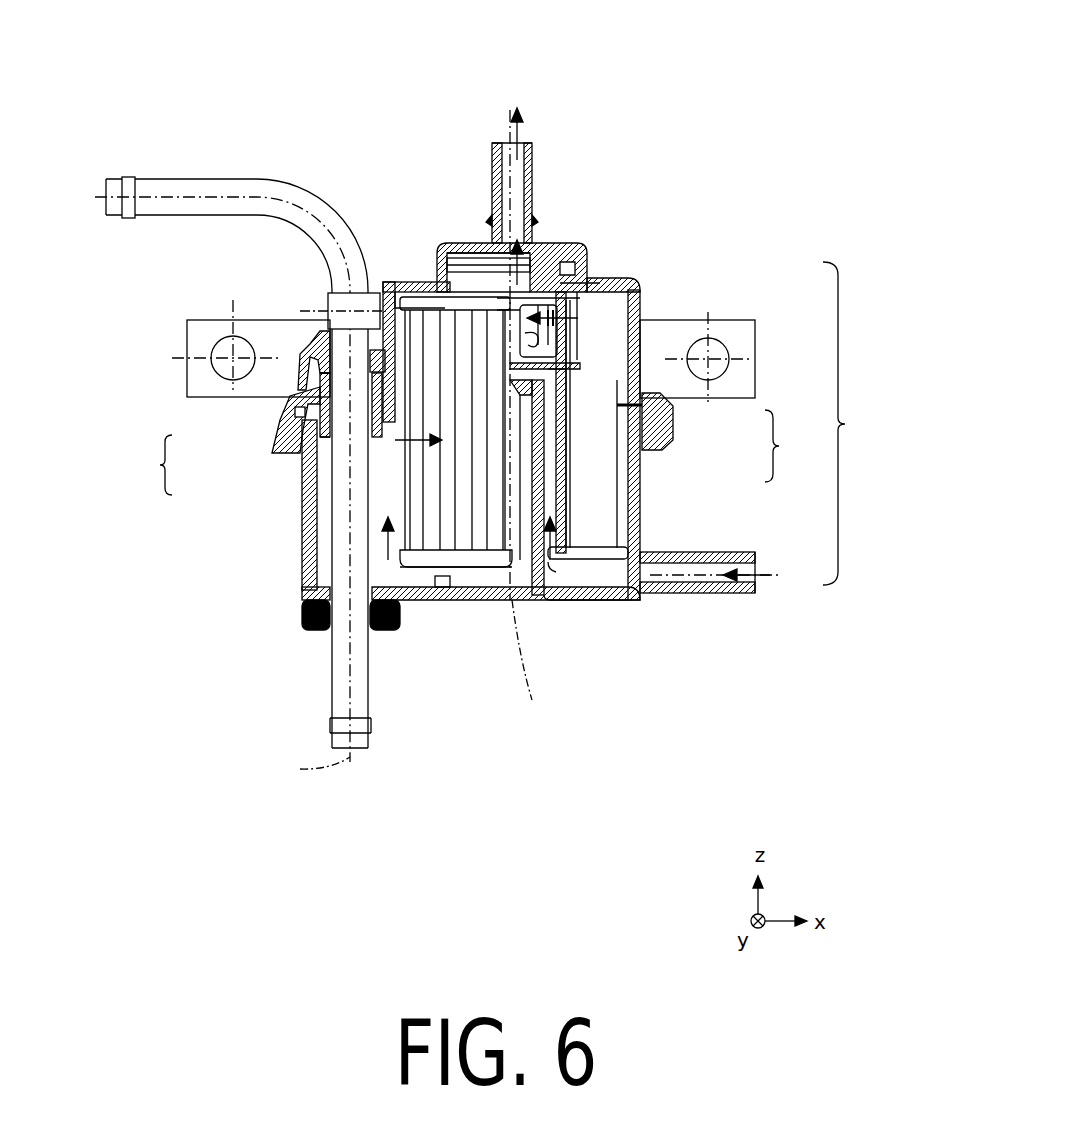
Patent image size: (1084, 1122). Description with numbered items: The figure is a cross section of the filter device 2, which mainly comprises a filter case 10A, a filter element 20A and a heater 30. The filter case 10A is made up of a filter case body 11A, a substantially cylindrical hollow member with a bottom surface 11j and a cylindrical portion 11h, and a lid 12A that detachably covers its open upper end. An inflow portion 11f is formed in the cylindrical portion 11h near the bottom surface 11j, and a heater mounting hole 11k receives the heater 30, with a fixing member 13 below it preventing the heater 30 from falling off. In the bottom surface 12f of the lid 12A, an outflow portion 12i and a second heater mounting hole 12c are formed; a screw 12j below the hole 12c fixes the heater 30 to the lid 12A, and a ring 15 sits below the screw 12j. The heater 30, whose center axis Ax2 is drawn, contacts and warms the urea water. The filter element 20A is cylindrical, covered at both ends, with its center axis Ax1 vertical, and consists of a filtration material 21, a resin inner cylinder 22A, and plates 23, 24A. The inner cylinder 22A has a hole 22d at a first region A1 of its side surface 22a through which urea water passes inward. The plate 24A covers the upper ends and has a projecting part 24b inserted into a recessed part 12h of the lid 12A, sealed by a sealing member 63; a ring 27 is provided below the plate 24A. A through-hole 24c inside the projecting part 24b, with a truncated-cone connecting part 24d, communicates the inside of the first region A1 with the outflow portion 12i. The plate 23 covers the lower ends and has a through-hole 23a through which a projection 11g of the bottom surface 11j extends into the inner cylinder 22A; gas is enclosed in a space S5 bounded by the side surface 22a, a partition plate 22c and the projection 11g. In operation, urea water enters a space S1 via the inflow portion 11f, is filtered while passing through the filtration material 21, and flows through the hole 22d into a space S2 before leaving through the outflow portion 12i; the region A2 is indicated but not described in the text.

The filter device 2 is at (699, 30).
The heater 30 is at (205, 205).
The center axis of the heater Ax2 is at (302, 770).
The heater mounting hole 12c is at (330, 312).
The recessed part 12h is at (438, 284).
The bottom surface 12f is at (598, 250).
The cylindrical portion 11h is at (630, 568).
The plate 24A is at (575, 292).
The projecting part 24b is at (560, 278).
The through-hole 24c is at (560, 300).
The connecting part 24d is at (538, 285).
The sealing member 63 is at (580, 266).
The first region A1 is at (565, 320).
The outflow portion 12i is at (534, 178).
The space S2 is at (523, 318).
The center axis Ax1 is at (534, 417).
The ring 27 is at (402, 298).
The filtration material 21 is at (600, 508).
The second area A2 is at (575, 460).
The plate 23 is at (602, 552).
The through-hole 23a is at (548, 552).
The inner cylinder 22A is at (672, 393).
The hole 22d is at (520, 332).
The partition plate 22c is at (558, 392).
The side surface 22a is at (565, 410).
The filter element 20A is at (538, 423).
The filter case body 11A is at (300, 520).
The bottom surface 11j is at (312, 566).
The heater mounting hole 11k is at (318, 594).
The fixing member 13 is at (312, 628).
The inflow portion 11f is at (690, 594).
The projection 11g is at (532, 600).
The space S1 is at (433, 602).
The space S5 is at (530, 440).
The lid 12A is at (278, 437).
The filter case 10A is at (137, 465).
The screw 12j is at (316, 386).
The ring 15 is at (322, 428).